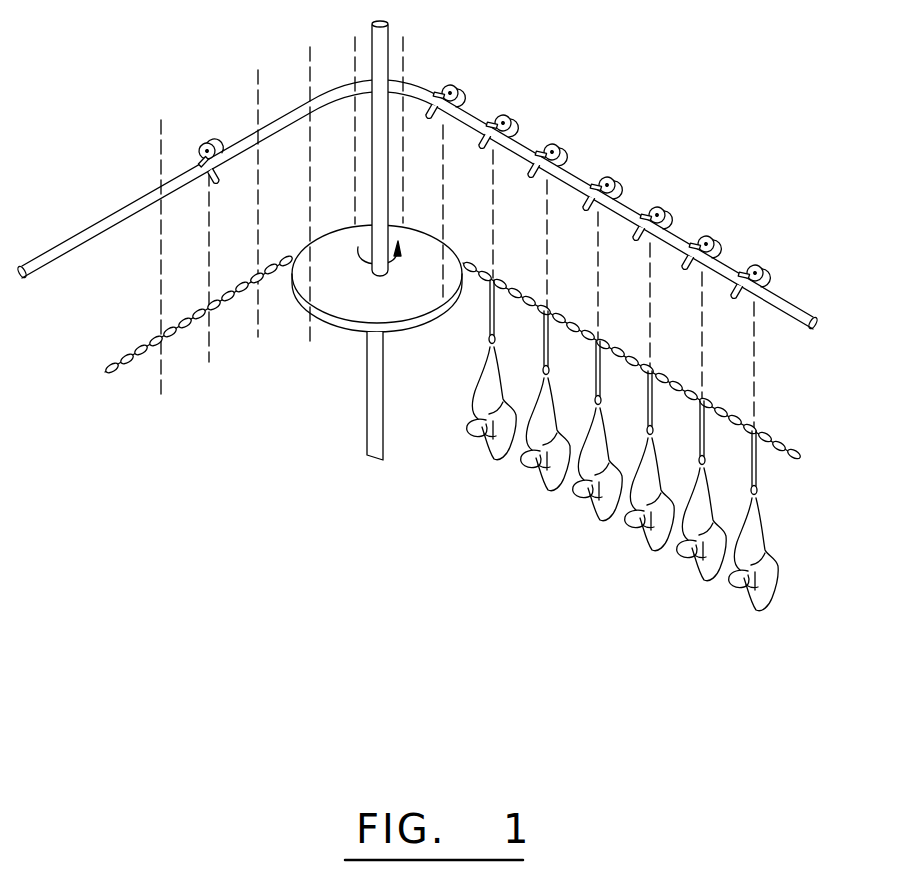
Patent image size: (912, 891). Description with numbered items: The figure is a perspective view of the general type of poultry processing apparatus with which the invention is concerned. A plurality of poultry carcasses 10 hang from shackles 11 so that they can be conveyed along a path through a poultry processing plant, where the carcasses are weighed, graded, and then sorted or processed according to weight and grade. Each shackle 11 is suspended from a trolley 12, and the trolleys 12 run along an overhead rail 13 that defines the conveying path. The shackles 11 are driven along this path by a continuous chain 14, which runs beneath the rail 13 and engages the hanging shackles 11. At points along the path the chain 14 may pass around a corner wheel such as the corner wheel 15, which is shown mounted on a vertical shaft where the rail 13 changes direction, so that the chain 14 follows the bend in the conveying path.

The poultry carcass 10 is at (762, 580).
The shackle 11 is at (755, 463).
The trolley 12 is at (758, 262).
The rail 13 is at (793, 300).
The continuous chain 14 is at (790, 447).
The corner wheel 15 is at (348, 295).